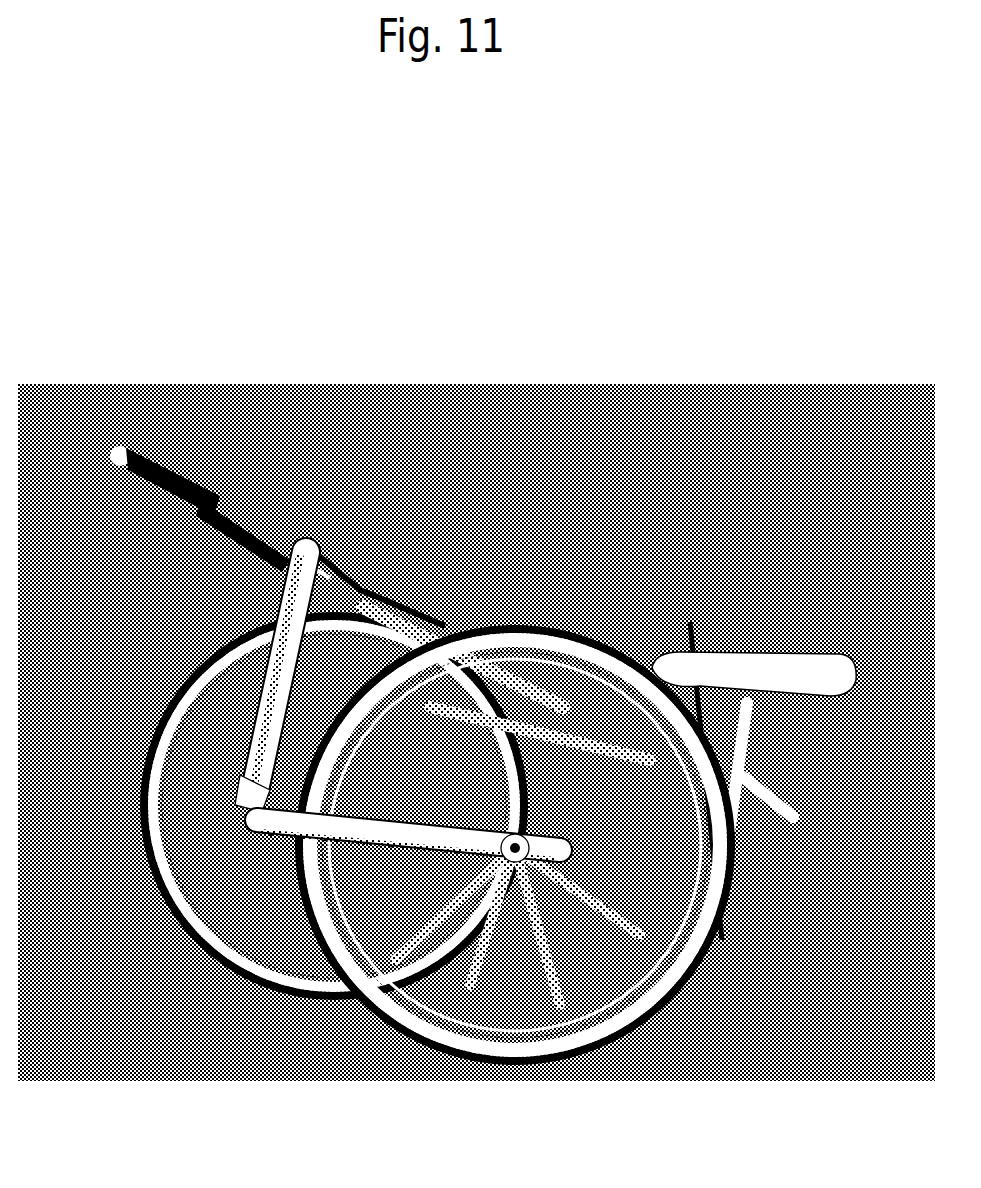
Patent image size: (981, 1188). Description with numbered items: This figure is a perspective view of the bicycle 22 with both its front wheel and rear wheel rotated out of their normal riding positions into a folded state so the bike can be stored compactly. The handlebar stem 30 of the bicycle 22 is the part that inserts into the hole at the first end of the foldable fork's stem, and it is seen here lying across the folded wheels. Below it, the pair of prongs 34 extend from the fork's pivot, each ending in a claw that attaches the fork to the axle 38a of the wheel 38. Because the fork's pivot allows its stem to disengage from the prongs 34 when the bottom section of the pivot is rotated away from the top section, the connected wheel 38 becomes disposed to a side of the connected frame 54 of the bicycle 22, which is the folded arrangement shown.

The bicycle 22 is at (224, 283).
The handlebar stem 30 is at (310, 583).
The prongs 34 is at (265, 838).
The wheel 38 is at (240, 946).
The axle 38a is at (525, 848).
The frame 54 is at (727, 830).